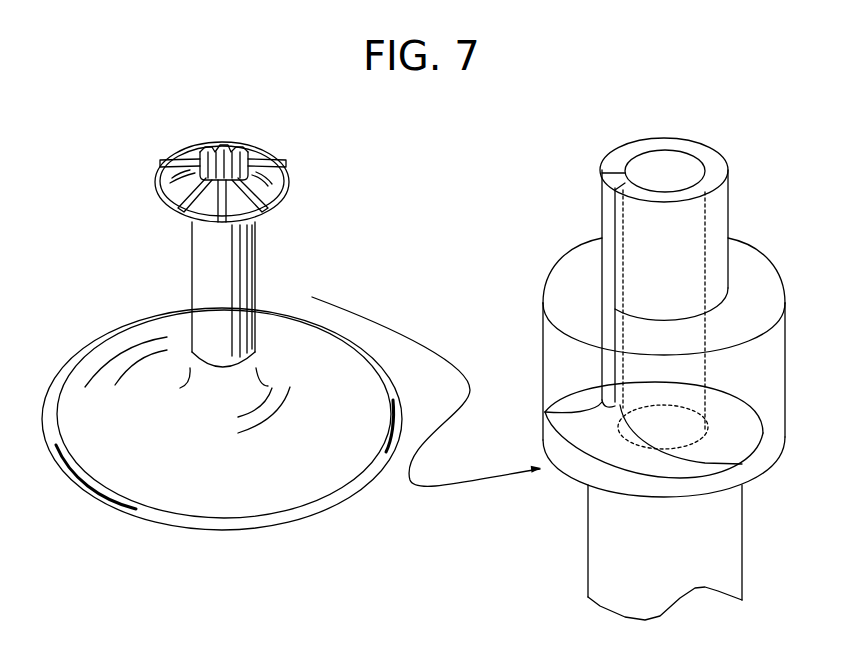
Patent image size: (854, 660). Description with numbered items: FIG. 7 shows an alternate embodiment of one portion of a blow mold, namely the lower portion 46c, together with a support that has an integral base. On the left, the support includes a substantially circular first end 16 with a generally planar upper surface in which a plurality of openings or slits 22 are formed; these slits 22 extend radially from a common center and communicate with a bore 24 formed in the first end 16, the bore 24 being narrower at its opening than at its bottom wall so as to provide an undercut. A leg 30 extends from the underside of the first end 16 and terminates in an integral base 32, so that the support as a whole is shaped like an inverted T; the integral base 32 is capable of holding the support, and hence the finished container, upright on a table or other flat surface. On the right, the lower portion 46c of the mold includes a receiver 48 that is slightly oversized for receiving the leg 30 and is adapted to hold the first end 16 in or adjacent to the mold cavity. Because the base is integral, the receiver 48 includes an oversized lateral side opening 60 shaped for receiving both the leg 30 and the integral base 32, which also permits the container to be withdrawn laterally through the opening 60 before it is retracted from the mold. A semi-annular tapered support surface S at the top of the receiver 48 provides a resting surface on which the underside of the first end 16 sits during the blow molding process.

The first end 16 is at (195, 113).
The slits 22 is at (177, 167).
The bore 24 is at (243, 150).
The leg 30 is at (213, 270).
The integral base 32 is at (182, 462).
The receiver 48 is at (678, 166).
The tapered support surface S is at (643, 145).
The lower portion 46c is at (717, 562).
The lateral side opening 60 is at (612, 433).